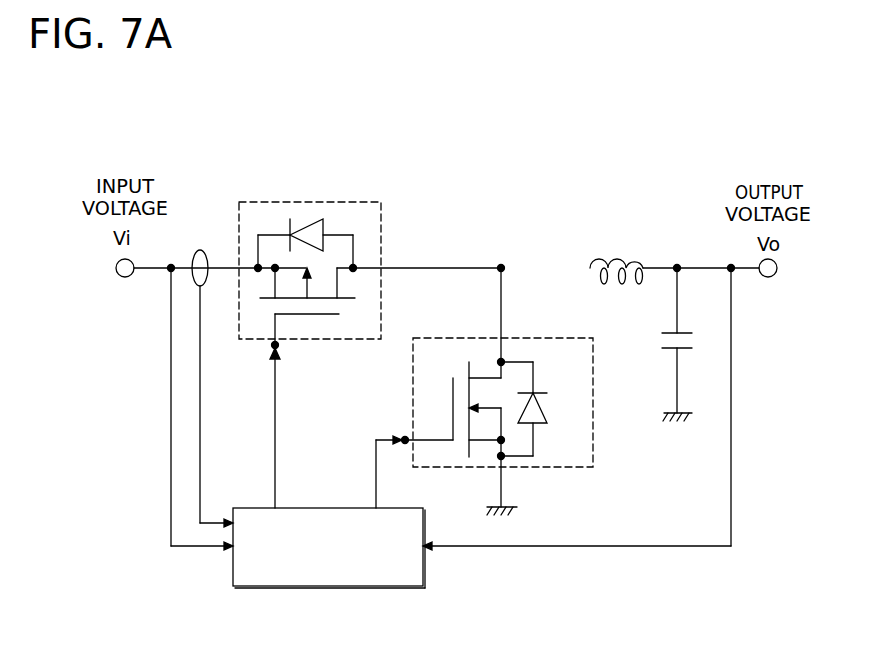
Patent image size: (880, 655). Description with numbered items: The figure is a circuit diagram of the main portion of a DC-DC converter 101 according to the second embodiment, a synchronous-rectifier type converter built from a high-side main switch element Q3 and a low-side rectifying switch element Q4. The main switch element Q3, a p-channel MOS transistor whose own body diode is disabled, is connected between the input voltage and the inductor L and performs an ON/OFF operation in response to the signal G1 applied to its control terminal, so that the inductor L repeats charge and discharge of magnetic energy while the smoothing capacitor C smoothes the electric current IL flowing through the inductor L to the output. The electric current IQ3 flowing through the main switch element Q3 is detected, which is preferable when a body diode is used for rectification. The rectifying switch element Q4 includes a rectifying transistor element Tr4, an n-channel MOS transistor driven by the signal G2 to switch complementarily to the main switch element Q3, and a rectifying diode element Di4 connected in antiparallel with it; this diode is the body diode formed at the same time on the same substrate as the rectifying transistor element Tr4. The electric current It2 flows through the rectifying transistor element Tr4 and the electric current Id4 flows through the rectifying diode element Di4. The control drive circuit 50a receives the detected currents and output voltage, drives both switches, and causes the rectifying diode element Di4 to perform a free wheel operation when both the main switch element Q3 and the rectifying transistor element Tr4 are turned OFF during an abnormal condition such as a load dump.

The DC-DC converter 101 is at (232, 122).
The main switch element Q3 is at (241, 204).
The signal G1 is at (292, 410).
The electric current flowing through the main switch element IQ3 is at (363, 257).
The inductor L is at (582, 254).
The electric current flowing through the inductor IL is at (631, 251).
The smoothing capacitor C is at (648, 326).
The rectifying switch element Q4 is at (440, 338).
The rectifying transistor element Tr4 is at (434, 408).
The rectifying diode element Di4 is at (564, 415).
The electric current flowing through the rectifying transistor element It2 is at (463, 395).
The electric current flowing through the rectifying diode element Id4 is at (552, 395).
The signal G2 is at (420, 472).
The control drive circuit 50a is at (258, 507).